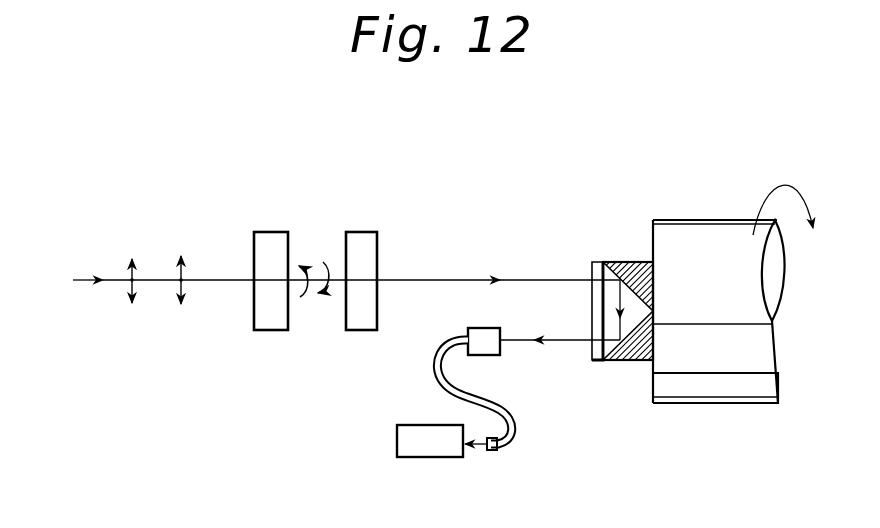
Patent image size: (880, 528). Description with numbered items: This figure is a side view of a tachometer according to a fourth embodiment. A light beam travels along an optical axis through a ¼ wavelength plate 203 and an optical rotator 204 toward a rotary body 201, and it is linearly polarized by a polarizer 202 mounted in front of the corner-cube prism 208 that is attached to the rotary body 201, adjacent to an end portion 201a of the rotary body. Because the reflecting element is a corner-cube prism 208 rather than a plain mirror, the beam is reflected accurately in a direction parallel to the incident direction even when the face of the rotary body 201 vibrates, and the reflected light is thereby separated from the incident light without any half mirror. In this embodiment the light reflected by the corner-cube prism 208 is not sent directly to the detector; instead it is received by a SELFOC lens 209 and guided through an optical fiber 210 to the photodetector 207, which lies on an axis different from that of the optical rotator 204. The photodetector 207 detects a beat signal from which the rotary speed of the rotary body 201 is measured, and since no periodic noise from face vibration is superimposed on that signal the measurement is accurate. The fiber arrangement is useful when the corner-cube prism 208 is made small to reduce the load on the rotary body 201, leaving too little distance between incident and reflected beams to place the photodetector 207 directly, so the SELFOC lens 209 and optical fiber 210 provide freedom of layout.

The rotary body 201 is at (685, 228).
The drum end portion 201a is at (650, 383).
The polarizer 202 is at (595, 363).
The ¼ wavelength plate 203 is at (265, 322).
The optical rotator 204 is at (362, 325).
The photodetector 207 is at (423, 450).
The corner-cube prism 208 is at (623, 260).
The SELFOC lens 209 is at (490, 347).
The optical fiber 210 is at (518, 433).